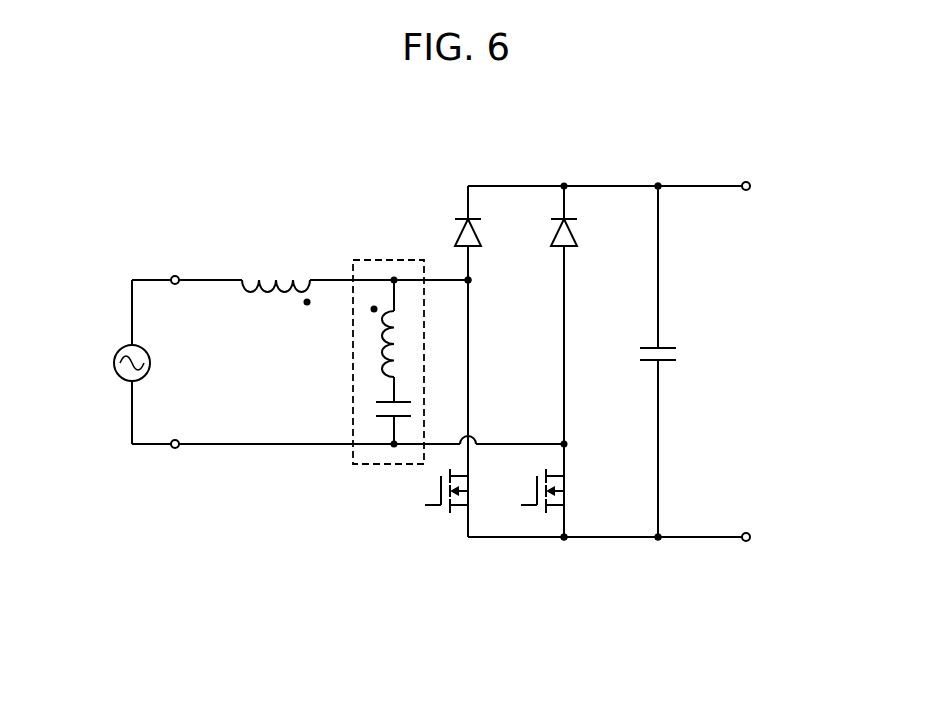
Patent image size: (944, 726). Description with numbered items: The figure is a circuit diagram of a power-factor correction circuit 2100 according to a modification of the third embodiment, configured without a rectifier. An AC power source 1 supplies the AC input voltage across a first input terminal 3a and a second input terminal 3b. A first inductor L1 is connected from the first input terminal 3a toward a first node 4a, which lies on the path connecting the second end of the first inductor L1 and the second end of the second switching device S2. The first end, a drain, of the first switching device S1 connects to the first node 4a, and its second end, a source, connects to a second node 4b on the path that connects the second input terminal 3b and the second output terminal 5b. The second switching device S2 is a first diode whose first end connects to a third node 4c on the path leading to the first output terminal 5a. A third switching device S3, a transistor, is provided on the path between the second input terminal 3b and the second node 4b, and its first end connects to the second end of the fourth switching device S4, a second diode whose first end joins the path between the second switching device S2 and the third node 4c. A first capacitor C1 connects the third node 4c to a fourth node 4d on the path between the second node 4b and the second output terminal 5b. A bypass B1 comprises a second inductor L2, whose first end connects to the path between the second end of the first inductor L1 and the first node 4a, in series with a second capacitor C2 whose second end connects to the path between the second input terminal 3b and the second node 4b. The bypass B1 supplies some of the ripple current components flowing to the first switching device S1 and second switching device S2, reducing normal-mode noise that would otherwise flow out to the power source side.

The power-factor correction circuit 2100 is at (370, 128).
The AC power source 1 is at (116, 357).
The first input terminal 3a is at (172, 277).
The second input terminal 3b is at (172, 448).
The first inductor L1 is at (276, 269).
The bypass B1 is at (392, 260).
The second inductor L2 is at (373, 344).
The second capacitor C2 is at (373, 410).
The first switching device S1 is at (461, 490).
The second switching device S2 is at (485, 226).
The third switching device S3 is at (559, 490).
The fourth switching device S4 is at (582, 226).
The first node 4a is at (470, 281).
The second node 4b is at (565, 539).
The third node 4c is at (659, 184).
The fourth node 4d is at (659, 539).
The first output terminal 5a is at (763, 188).
The second output terminal 5b is at (763, 538).
The first capacitor C1 is at (676, 361).